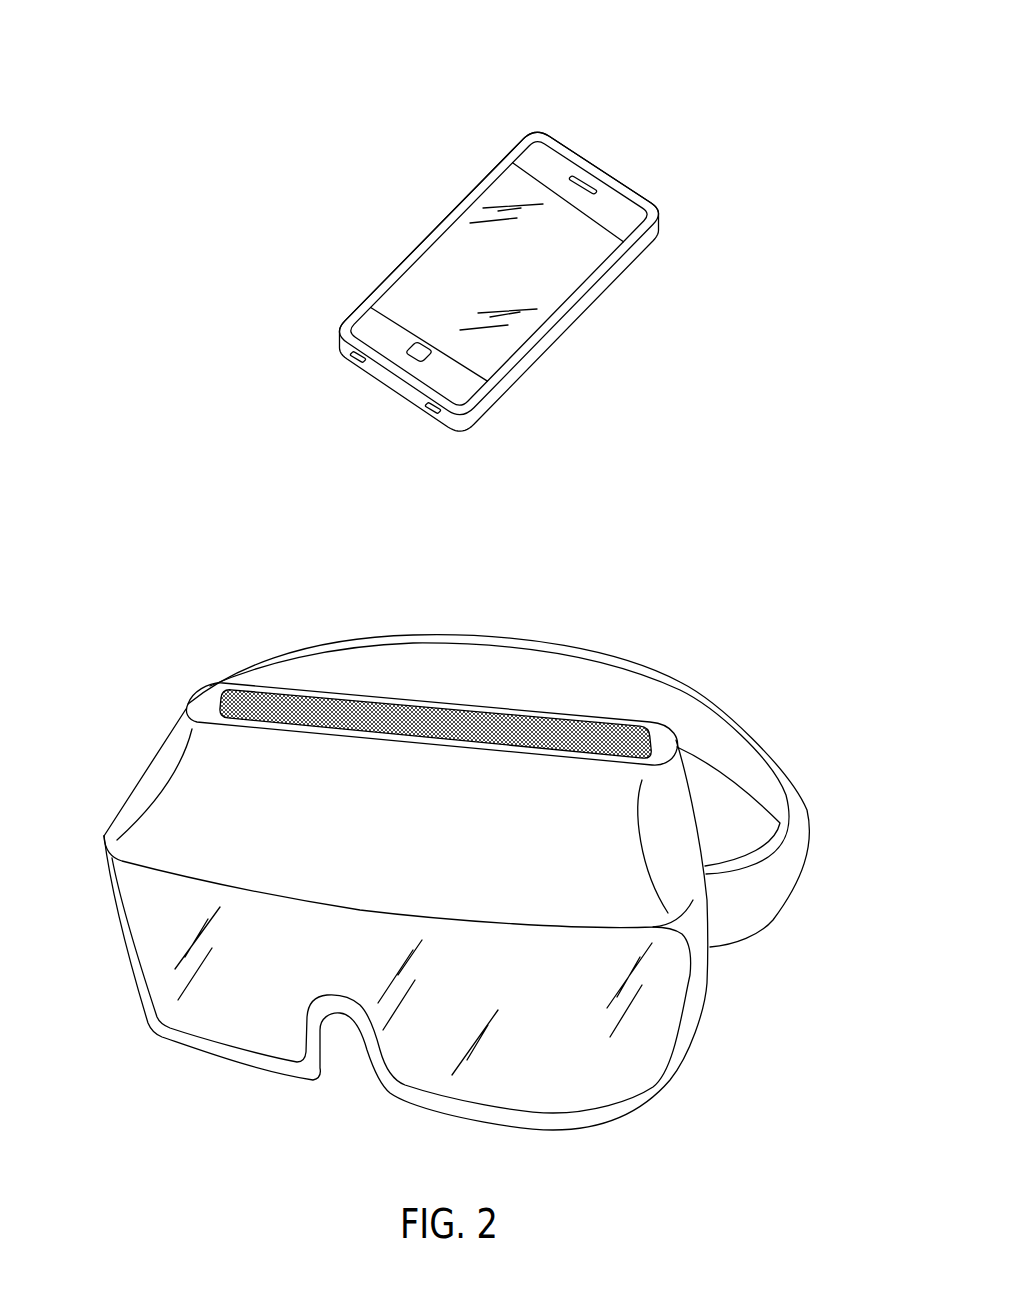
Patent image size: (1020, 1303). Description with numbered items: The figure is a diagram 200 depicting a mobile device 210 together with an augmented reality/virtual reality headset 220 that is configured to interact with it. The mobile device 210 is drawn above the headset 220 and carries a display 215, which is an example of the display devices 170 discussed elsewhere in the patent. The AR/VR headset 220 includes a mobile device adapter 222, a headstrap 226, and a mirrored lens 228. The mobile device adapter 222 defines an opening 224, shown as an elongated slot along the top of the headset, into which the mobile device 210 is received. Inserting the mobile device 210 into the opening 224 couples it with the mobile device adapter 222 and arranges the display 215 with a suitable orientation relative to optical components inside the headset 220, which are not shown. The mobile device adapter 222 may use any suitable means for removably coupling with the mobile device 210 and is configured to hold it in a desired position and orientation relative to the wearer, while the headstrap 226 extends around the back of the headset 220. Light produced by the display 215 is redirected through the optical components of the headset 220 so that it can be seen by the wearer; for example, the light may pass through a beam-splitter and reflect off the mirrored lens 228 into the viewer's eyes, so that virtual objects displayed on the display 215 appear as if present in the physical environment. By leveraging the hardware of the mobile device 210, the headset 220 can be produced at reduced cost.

The diagram 200 is at (705, 53).
The mobile device 210 is at (618, 173).
The display 215 is at (424, 274).
The display devices 170 is at (440, 268).
The AR/VR headset 220 is at (132, 652).
The mobile device adapter 222 is at (128, 806).
The opening 224 is at (458, 720).
The headstrap 226 is at (783, 873).
The mirrored lens 228 is at (612, 1072).